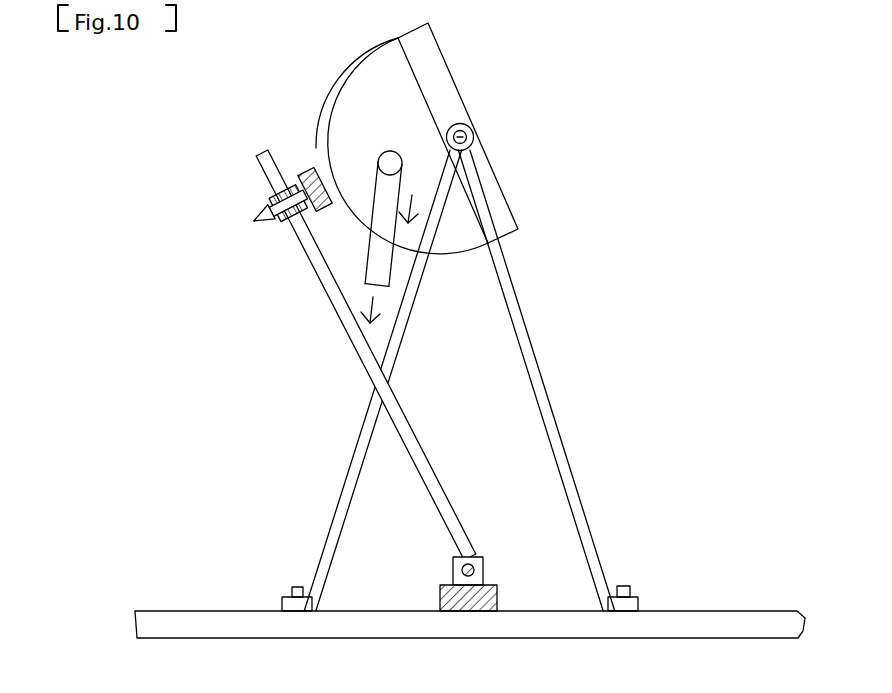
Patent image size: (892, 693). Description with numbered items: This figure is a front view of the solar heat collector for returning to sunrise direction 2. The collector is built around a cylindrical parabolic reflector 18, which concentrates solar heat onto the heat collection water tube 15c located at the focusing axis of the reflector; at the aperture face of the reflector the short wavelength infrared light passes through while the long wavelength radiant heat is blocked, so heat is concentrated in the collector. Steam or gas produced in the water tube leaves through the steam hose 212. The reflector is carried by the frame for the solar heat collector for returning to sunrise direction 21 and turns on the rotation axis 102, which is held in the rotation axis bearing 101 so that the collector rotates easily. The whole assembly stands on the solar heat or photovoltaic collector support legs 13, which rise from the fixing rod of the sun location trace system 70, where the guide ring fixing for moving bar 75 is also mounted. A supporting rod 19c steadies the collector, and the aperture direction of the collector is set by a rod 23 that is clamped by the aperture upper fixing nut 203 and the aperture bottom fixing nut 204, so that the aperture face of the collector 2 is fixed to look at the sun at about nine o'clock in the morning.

The solar heat collector for returning to sunrise direction 2 is at (370, 75).
The cylindrical parabolic reflector 18 is at (337, 82).
The frame for the solar heat collector for returning to sunrise direction 21 is at (427, 52).
The rotation axis bearing for solar-heat or photovoltaic collector 101 is at (469, 123).
The rotation axis of solar heat or photovoltaic collector 102 is at (466, 137).
The solar heat or photovoltaic collector support legs 13 is at (351, 466).
The lever arm 23 is at (347, 333).
The aperture upper fixing nut 203 is at (256, 220).
The supporting rod of the solar heat collector for returning to sunrise direction 19c is at (300, 220).
The heat collection water tube of the solar heat collector for returning to sunrise 15c is at (390, 163).
The steam (or gas) hose 212 is at (378, 272).
The aperture bottom fixing nut 204 is at (473, 565).
The guide ring fixing for moving bar 75 is at (498, 591).
The fixing rod of the sun location trace system 70 is at (690, 622).